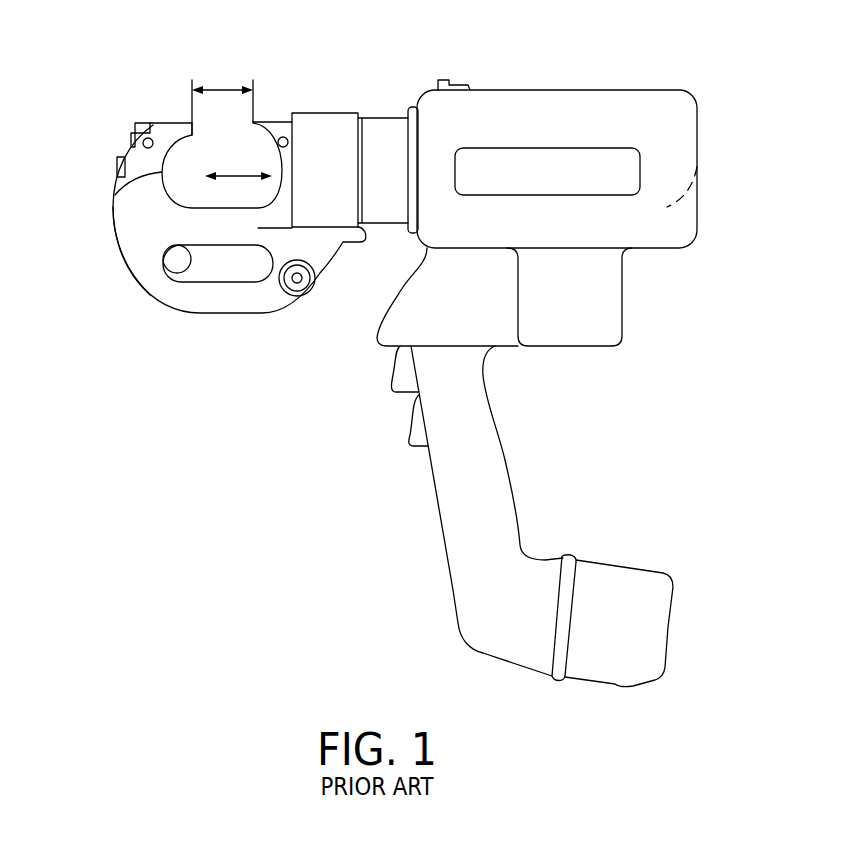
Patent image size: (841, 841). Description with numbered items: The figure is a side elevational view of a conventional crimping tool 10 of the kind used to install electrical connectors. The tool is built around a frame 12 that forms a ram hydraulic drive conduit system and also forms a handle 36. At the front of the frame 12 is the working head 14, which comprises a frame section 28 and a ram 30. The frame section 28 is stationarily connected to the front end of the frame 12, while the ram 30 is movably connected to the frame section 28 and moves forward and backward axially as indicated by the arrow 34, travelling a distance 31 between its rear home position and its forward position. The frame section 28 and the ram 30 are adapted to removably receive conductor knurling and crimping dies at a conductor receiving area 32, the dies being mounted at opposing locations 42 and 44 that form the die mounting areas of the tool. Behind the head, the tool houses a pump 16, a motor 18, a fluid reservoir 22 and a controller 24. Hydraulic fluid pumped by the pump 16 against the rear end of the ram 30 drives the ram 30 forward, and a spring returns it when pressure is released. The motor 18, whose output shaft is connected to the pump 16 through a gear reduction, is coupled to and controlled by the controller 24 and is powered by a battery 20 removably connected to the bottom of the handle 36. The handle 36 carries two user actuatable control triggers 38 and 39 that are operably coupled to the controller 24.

The crimping tool 10 is at (97, 91).
The frame 12 is at (500, 412).
The working head 14 is at (148, 293).
The pump 16 is at (437, 173).
The motor 18 is at (640, 160).
The battery 20 is at (668, 630).
The fluid reservoir 22 is at (588, 320).
The controller 24 is at (697, 167).
The frame section 28 is at (120, 253).
The ram 30 is at (263, 122).
The distance 31 is at (215, 80).
The conductor receiving area 32 is at (193, 153).
The arrow 34 is at (243, 178).
The handle 36 is at (446, 504).
The control trigger 38 is at (413, 427).
The control trigger 39 is at (395, 372).
The die mounting location 42 is at (115, 200).
The die mounting location 44 is at (265, 222).